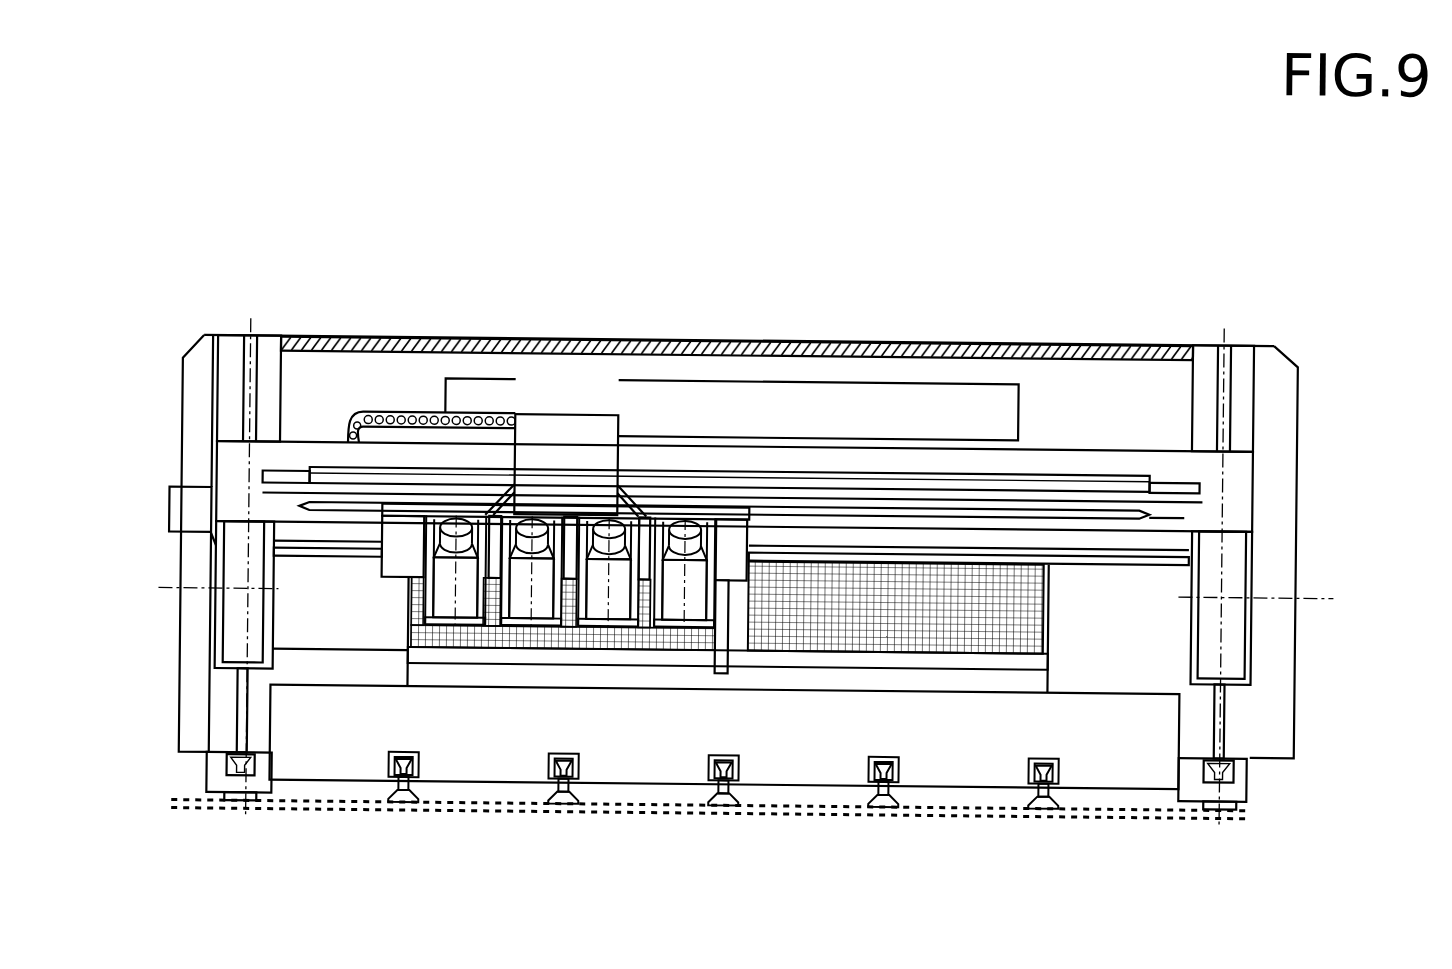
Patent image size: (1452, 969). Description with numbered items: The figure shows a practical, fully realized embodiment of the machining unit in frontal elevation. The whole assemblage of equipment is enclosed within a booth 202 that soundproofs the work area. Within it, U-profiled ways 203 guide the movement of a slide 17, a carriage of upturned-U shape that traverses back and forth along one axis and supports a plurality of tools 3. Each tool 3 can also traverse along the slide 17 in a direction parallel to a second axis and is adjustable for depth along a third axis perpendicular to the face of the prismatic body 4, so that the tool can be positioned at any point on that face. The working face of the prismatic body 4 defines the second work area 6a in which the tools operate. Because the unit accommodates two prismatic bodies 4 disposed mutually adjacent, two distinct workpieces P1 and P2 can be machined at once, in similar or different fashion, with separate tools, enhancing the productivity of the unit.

The booth 202 is at (195, 343).
The U-profiled ways 203 is at (1222, 409).
The slide 17 is at (300, 464).
The tool 3 is at (625, 599).
The second work area 6a is at (508, 636).
The prismatic body 4 is at (805, 604).
The workpiece P1 is at (393, 601).
The workpiece P2 is at (1068, 619).